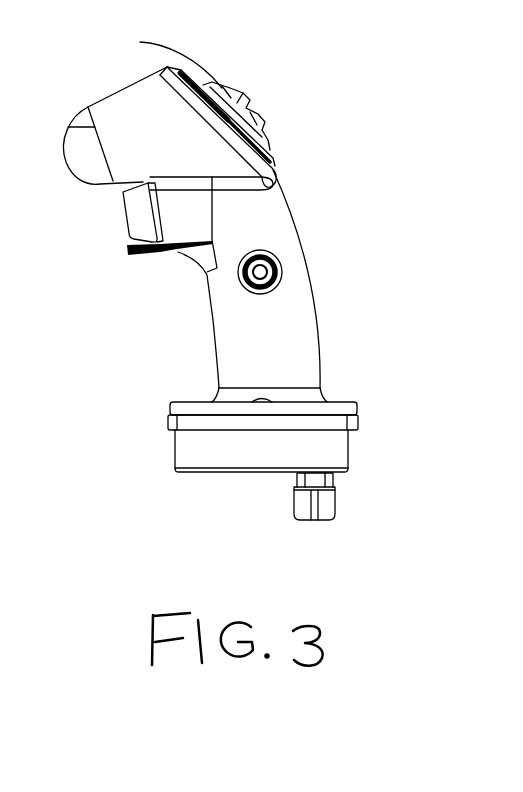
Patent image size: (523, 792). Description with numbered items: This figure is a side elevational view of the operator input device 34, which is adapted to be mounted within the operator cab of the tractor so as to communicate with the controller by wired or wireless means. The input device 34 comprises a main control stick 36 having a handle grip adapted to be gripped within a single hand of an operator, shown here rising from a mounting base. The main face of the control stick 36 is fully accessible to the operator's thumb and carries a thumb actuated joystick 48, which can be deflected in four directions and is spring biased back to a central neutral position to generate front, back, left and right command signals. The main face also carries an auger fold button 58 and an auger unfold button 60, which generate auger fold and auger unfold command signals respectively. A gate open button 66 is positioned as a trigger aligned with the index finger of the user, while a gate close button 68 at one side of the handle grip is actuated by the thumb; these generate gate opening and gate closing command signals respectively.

The input device 34 is at (107, 317).
The main control stick 36 is at (300, 280).
The thumb actuated joystick 48 is at (258, 110).
The auger fold button 58 is at (140, 42).
The auger unfold button 60 is at (265, 139).
The gate open button 66 is at (142, 217).
The gate close button 68 is at (243, 281).